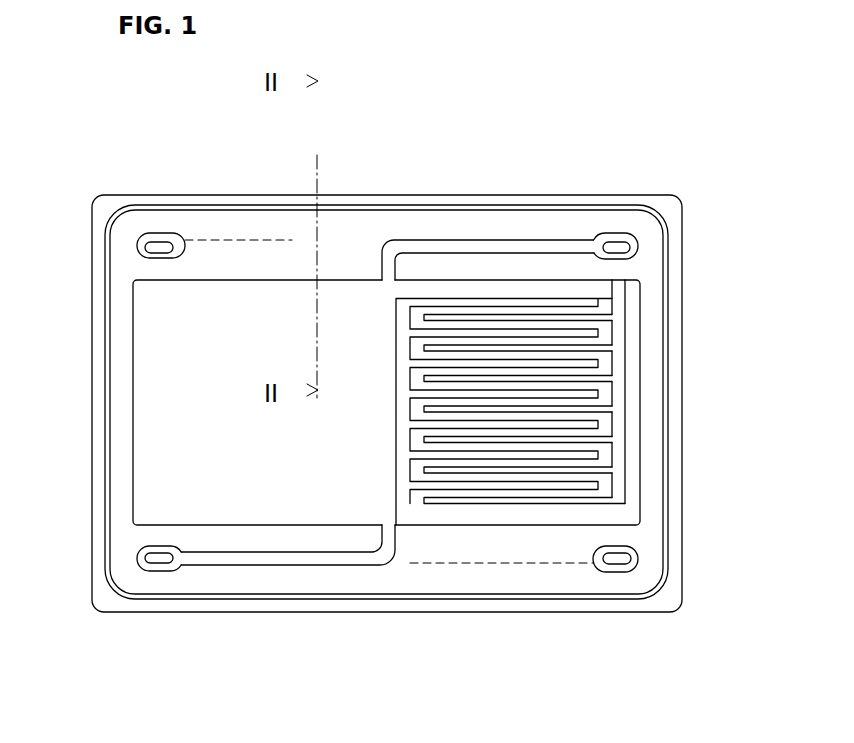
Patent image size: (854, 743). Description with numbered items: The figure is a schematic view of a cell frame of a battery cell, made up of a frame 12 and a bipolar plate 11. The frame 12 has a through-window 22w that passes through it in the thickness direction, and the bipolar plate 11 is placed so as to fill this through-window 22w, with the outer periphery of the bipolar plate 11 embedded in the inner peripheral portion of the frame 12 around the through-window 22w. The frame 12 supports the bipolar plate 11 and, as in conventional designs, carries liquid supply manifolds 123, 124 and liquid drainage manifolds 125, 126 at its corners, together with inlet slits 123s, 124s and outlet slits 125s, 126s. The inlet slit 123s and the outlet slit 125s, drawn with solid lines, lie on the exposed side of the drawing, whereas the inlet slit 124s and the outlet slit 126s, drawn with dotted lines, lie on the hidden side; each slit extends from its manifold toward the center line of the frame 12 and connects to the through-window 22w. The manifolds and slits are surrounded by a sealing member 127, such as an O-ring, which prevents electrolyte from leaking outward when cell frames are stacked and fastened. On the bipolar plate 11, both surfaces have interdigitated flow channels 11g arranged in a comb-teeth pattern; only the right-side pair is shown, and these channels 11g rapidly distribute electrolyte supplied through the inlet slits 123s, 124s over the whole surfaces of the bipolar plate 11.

The frame 12 is at (106, 193).
The bipolar plate 11 is at (357, 303).
The interdigitated flow channel 11g is at (613, 352).
The through-window 22w is at (628, 484).
The sealing member 127 is at (670, 458).
The liquid supply manifold 123 is at (153, 577).
The liquid supply manifold 124 is at (620, 572).
The liquid drainage manifold 125 is at (598, 237).
The liquid drainage manifold 126 is at (160, 233).
The inlet slit 123s is at (237, 558).
The inlet slit 124s is at (480, 563).
The outlet slit 125s is at (508, 240).
The outlet slit 126s is at (233, 243).